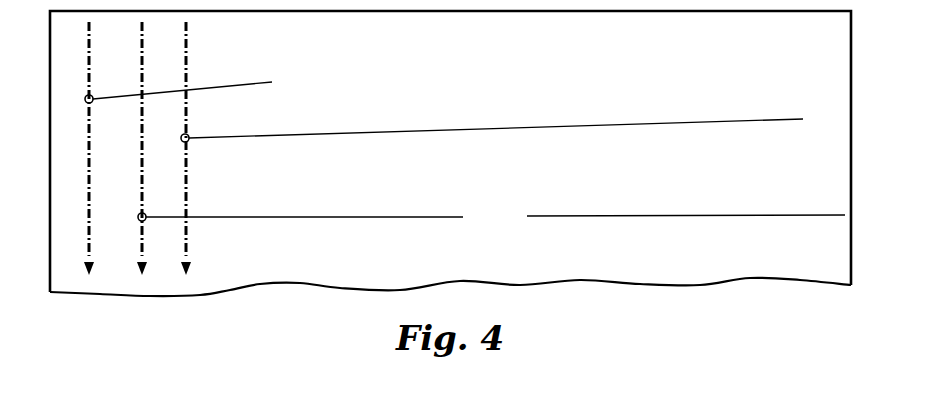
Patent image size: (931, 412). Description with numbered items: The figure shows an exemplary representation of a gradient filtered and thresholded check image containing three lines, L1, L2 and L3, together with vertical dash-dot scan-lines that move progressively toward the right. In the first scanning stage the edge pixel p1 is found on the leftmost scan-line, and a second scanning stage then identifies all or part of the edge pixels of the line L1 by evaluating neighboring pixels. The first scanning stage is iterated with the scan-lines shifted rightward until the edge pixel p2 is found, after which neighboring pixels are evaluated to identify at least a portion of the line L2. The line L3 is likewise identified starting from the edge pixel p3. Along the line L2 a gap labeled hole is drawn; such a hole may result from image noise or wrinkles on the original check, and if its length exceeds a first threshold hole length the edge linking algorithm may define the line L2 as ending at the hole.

The edge pixel p1 is at (75, 98).
The edge pixel p2 is at (125, 216).
The edge pixel p3 is at (167, 138).
The line L1 is at (204, 84).
The line L2 is at (495, 201).
The line L3 is at (507, 112).
The element hole is at (483, 193).